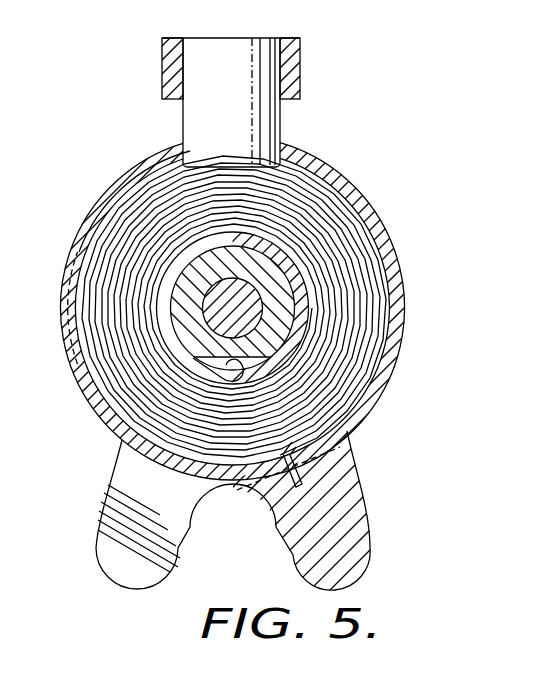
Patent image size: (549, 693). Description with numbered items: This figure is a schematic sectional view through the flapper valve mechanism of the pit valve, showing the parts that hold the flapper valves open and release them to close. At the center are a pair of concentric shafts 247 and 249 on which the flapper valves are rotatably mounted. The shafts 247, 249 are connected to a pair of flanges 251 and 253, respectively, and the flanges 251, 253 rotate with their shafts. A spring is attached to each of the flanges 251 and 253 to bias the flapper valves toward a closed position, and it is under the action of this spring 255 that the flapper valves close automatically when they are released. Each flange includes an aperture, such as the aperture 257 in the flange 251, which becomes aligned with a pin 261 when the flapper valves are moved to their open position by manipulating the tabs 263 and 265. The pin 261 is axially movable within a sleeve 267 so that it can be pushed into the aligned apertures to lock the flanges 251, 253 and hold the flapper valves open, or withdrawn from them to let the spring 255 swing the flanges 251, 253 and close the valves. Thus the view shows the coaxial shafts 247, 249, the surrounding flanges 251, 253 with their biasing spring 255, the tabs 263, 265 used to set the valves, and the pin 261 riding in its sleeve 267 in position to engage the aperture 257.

The shaft 247 is at (274, 346).
The shaft 249 is at (274, 345).
The flange 251 is at (372, 388).
The flange 253 is at (278, 255).
The spring 255 is at (360, 262).
The aperture 257 is at (258, 152).
The pin 261 is at (272, 70).
The tab 263 is at (365, 543).
The tab 265 is at (100, 558).
The sleeve 267 is at (186, 65).